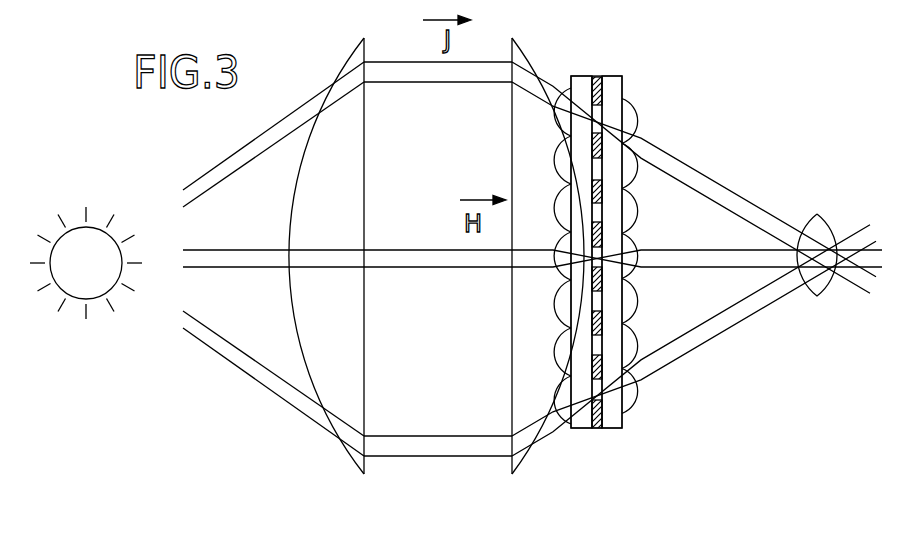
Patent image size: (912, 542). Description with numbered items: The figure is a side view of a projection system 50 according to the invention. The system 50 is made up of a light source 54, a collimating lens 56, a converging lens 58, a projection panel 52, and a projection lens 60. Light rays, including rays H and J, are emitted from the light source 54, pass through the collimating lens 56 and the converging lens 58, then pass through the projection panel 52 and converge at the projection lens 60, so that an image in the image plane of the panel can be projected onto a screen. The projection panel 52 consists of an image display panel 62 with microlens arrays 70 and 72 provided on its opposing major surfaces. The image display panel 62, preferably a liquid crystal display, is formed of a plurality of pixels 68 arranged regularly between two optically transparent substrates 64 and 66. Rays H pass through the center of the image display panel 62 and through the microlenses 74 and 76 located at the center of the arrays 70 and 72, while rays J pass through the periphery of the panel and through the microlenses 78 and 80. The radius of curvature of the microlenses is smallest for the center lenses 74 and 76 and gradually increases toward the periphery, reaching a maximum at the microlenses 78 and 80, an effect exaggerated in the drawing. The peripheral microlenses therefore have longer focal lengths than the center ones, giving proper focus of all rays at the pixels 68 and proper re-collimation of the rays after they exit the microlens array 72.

The projection system 50 is at (699, 76).
The projection panel 52 is at (613, 275).
The light source 54 is at (78, 230).
The collimating lens 56 is at (374, 462).
The converging lens 58 is at (506, 461).
The projection lens 60 is at (823, 292).
The image display panel 62 is at (585, 445).
The optically transparent substrate 64 is at (585, 75).
The optically transparent substrate 66 is at (610, 74).
The pixels 68 is at (600, 348).
The microlens array 70 is at (535, 335).
The microlens array 72 is at (667, 328).
The microlens 74 is at (558, 268).
The microlens 76 is at (643, 265).
The microlens 78 is at (563, 117).
The microlens 80 is at (630, 120).